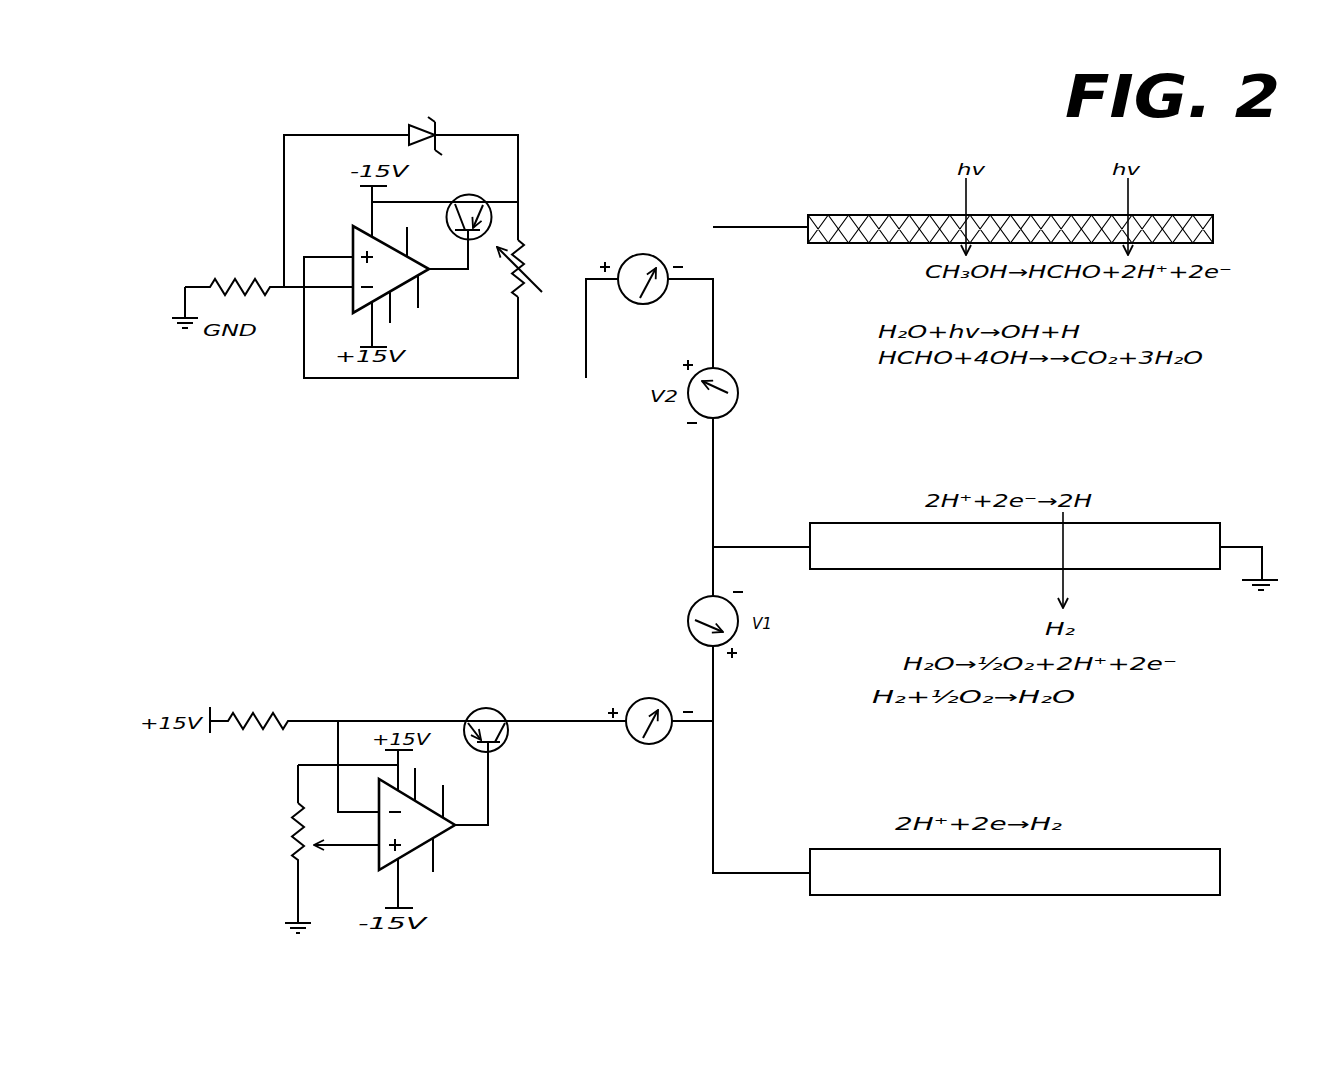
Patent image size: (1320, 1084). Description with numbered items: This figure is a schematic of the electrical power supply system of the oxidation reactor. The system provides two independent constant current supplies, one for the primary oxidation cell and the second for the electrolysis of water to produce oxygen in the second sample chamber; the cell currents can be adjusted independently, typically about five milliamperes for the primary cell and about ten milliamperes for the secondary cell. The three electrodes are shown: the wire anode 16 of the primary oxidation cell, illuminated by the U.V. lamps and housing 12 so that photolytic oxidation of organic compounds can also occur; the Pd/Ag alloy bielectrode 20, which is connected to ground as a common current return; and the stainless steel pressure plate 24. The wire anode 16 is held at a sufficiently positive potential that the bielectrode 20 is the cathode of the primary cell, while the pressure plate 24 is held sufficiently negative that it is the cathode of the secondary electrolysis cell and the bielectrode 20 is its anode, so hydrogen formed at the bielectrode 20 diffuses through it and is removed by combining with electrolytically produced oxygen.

The U.V. lamps and housing 12 is at (663, 257).
The wire-mesh anode 16 is at (868, 215).
The bielectrode 20 is at (865, 523).
The stainless steel pressure plate 24 is at (880, 849).